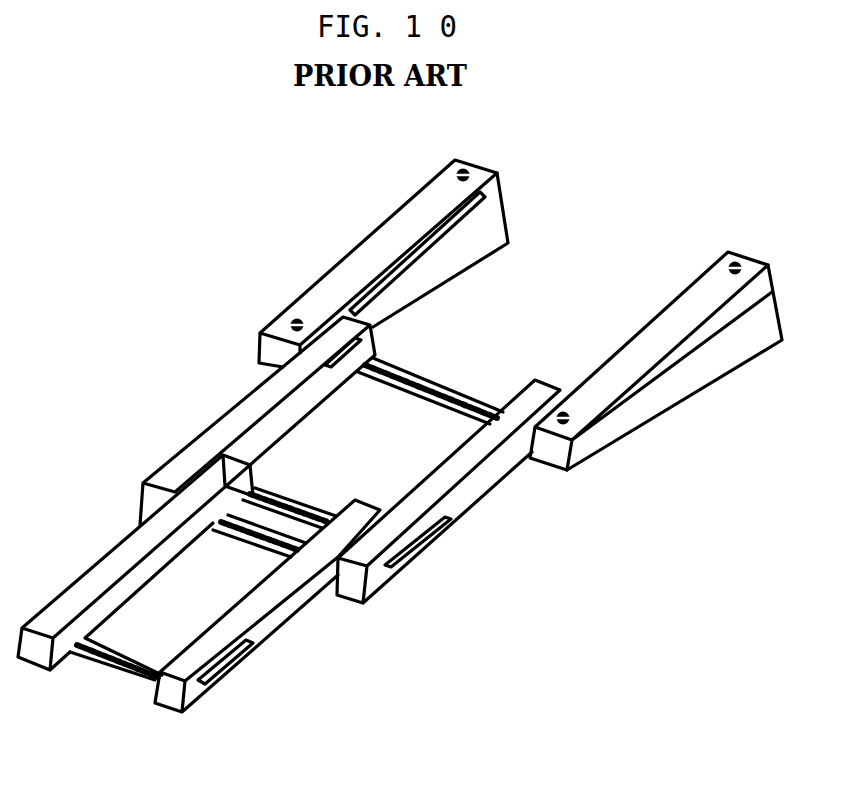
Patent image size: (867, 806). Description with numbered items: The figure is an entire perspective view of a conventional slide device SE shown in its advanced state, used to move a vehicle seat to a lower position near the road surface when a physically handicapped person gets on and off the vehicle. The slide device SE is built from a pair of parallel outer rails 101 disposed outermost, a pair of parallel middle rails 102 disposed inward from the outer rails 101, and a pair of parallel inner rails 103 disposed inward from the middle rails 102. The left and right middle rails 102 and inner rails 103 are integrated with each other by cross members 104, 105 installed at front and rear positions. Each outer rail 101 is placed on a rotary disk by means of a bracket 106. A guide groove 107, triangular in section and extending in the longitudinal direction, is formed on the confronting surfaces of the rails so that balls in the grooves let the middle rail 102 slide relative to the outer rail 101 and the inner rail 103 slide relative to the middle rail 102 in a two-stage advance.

The slide device SE is at (362, 230).
The outer rail 101 is at (320, 303).
The middle rail 102 is at (240, 415).
The inner rail 103 is at (100, 582).
The cross member 104 is at (455, 380).
The cross member 105 is at (285, 500).
The bracket 106 is at (490, 232).
The guide groove 107 is at (430, 247).